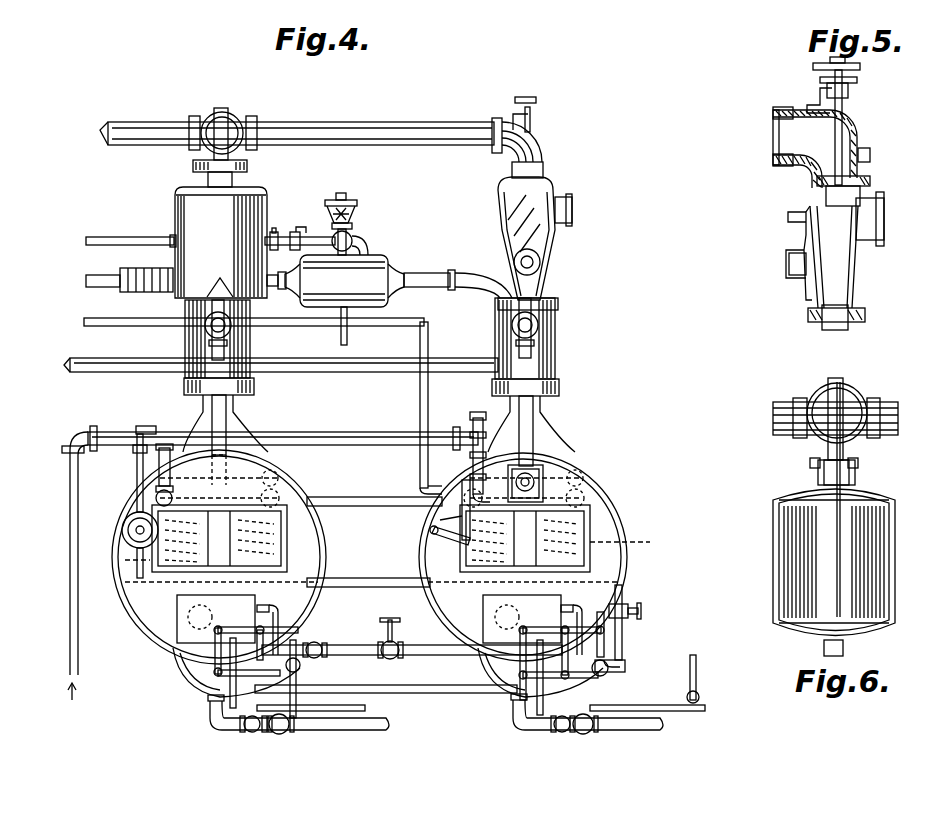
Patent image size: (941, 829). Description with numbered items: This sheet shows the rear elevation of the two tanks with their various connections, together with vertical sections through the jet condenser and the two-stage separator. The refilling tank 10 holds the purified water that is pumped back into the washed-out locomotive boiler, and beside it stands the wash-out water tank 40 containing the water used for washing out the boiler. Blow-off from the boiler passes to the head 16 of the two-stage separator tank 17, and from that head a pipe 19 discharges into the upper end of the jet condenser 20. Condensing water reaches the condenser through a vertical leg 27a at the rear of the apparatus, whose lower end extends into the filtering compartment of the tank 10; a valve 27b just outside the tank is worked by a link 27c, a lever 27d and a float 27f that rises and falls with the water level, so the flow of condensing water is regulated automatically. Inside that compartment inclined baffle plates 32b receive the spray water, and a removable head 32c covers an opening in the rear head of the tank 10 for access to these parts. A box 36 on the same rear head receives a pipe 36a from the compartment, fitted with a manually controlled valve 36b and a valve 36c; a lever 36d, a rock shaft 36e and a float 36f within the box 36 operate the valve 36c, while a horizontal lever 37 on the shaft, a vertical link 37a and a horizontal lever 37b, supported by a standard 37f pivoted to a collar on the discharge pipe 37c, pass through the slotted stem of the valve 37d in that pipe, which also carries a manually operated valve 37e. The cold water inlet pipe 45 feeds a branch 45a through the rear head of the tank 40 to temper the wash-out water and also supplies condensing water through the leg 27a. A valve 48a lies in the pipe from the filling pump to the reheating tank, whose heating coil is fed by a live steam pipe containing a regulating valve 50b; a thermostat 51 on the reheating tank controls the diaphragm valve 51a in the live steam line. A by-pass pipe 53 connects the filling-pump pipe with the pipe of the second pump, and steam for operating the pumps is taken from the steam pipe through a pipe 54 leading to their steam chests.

In FIG. 4, the refilling tank 10 is at (624, 528).
In FIG. 4, the head of separator 16 is at (231, 120).
In FIG. 6, the head of separator 16 is at (850, 398).
In FIG. 4, the two-stage separator tank 17 is at (178, 206).
In FIG. 6, the two-stage separator tank 17 is at (775, 539).
In FIG. 4, the pipe 19 is at (340, 126).
In FIG. 4, the jet condenser 20 is at (497, 198).
In FIG. 5, the jet condenser 20 is at (870, 188).
In FIG. 4, the vertical leg 27a is at (472, 420).
In FIG. 4, the valve 27b is at (458, 488).
In FIG. 4, the link 27c is at (458, 514).
In FIG. 4, the lever 27d is at (440, 535).
In FIG. 4, the float 27f is at (416, 588).
In FIG. 4, the baffle plates 32b is at (634, 543).
In FIG. 4, the removable plate or head 32c is at (590, 510).
In FIG. 4, the box 36 is at (369, 612).
In FIG. 4, the pipe 36a is at (622, 636).
In FIG. 4, the manually controlled valve 36b is at (623, 606).
In FIG. 4, the valve 36c is at (628, 668).
In FIG. 4, the lever 36d is at (595, 622).
In FIG. 4, the rock shaft 36e is at (566, 612).
In FIG. 4, the float 36f is at (539, 612).
In FIG. 4, the horizontally disposed lever 37 is at (407, 665).
In FIG. 4, the vertically disposed link 37a is at (478, 658).
In FIG. 4, the horizontally disposed lever 37b is at (587, 708).
In FIG. 4, the discharge pipe 37c is at (680, 708).
In FIG. 4, the valve 37d is at (363, 708).
In FIG. 4, the valve 37e is at (399, 679).
In FIG. 4, the standard 37f is at (600, 690).
In FIG. 4, the wash-out water tank 40 is at (156, 634).
In FIG. 4, the cold water inlet pipe 45 is at (125, 432).
In FIG. 4, the branch 45a is at (158, 458).
In FIG. 4, the valve 48a is at (130, 284).
In FIG. 4, the regulating valve 50b is at (296, 236).
In FIG. 4, the thermostat 51 is at (290, 326).
In FIG. 4, the valve 51a is at (352, 236).
In FIG. 4, the by-pass pipe 53 is at (312, 372).
In FIG. 4, the pipe 54 is at (183, 394).